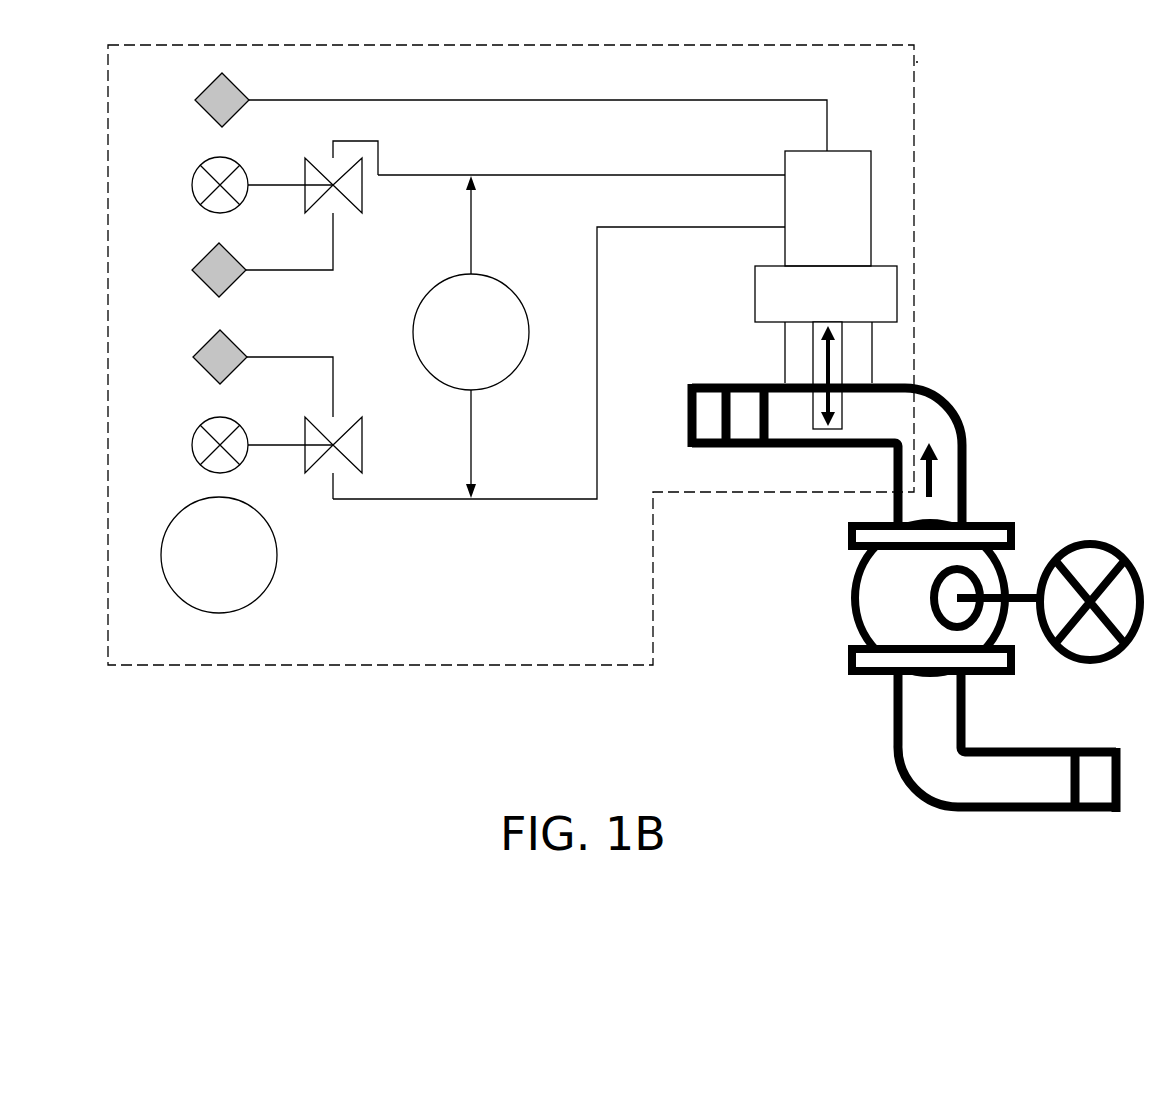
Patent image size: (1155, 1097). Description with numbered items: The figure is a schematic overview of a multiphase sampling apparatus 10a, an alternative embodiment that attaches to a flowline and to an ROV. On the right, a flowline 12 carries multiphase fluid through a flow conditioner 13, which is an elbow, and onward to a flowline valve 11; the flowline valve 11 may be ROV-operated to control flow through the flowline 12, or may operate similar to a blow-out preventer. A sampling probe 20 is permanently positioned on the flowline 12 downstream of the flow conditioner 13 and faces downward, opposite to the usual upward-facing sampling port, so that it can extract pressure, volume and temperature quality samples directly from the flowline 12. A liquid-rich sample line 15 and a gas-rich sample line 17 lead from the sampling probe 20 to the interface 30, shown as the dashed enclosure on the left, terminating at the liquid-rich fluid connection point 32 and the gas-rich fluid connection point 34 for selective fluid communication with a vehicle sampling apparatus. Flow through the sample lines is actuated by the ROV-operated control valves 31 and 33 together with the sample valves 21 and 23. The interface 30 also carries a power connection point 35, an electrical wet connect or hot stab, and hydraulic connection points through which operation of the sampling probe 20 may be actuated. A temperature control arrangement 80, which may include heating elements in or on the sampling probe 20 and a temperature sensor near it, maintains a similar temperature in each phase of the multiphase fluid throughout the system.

The multiphase sampling apparatus 10a is at (888, 240).
The flowline valve 11 is at (1005, 575).
The flowline 12 is at (968, 468).
The flow conditioner 13 is at (953, 410).
The liquid-rich sample line 15 is at (570, 175).
The gas-rich sample line 17 is at (515, 499).
The sampling probe 20 is at (843, 418).
The sample valve 21 is at (345, 173).
The sample valve 23 is at (343, 417).
The interface 30 is at (219, 630).
The ROV-operated control valve 31 is at (233, 157).
The liquid-rich fluid connection point 32 is at (238, 262).
The ROV-operated control valve 33 is at (232, 415).
The gas-rich fluid connection point 34 is at (245, 345).
The power connection point 35 is at (204, 568).
The temperature control arrangement 80 is at (922, 62).